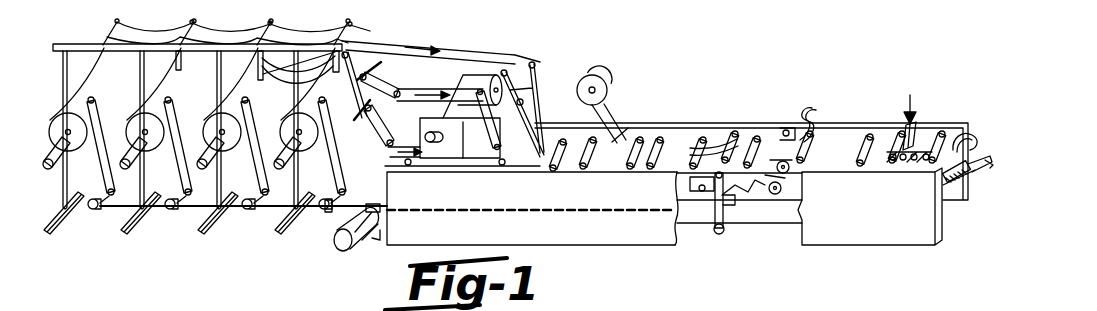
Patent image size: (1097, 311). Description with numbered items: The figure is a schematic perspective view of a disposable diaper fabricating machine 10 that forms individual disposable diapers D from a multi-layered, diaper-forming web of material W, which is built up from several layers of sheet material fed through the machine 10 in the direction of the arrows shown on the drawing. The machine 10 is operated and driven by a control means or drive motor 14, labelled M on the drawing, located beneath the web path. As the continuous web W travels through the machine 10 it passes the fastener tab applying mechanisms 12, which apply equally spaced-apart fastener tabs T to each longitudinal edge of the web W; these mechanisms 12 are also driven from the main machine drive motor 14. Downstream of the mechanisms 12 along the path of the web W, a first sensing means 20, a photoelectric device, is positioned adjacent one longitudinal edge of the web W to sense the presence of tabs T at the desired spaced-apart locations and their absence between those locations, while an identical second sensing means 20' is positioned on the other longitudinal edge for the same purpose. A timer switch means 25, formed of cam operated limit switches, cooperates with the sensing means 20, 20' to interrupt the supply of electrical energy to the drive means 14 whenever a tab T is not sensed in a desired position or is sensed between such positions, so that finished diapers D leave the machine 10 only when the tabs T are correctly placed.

The disposable diaper fabricating machine 10 is at (572, 58).
The fastener tab applying mechanisms 12 is at (743, 240).
The drive motor 14 is at (332, 240).
The motor M is at (345, 246).
The web of material W is at (690, 133).
The fastener tabs T is at (811, 121).
The first sensing means 20 is at (801, 187).
The second sensing means 20' is at (782, 105).
The timer switch means 25 is at (670, 197).
The disposable diapers D is at (988, 142).